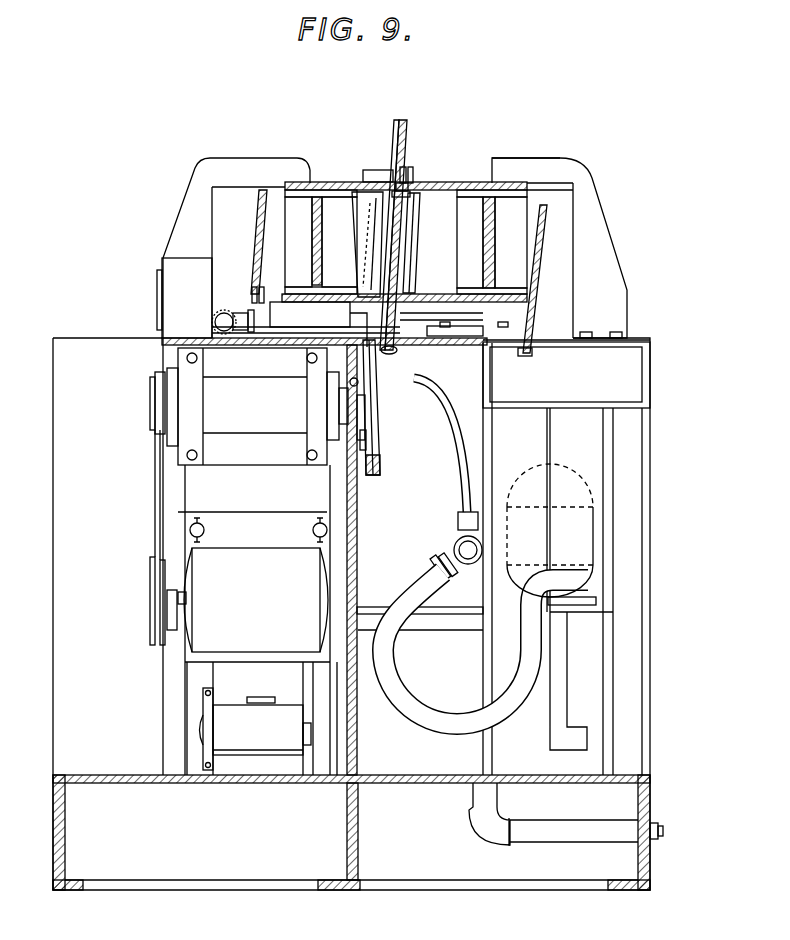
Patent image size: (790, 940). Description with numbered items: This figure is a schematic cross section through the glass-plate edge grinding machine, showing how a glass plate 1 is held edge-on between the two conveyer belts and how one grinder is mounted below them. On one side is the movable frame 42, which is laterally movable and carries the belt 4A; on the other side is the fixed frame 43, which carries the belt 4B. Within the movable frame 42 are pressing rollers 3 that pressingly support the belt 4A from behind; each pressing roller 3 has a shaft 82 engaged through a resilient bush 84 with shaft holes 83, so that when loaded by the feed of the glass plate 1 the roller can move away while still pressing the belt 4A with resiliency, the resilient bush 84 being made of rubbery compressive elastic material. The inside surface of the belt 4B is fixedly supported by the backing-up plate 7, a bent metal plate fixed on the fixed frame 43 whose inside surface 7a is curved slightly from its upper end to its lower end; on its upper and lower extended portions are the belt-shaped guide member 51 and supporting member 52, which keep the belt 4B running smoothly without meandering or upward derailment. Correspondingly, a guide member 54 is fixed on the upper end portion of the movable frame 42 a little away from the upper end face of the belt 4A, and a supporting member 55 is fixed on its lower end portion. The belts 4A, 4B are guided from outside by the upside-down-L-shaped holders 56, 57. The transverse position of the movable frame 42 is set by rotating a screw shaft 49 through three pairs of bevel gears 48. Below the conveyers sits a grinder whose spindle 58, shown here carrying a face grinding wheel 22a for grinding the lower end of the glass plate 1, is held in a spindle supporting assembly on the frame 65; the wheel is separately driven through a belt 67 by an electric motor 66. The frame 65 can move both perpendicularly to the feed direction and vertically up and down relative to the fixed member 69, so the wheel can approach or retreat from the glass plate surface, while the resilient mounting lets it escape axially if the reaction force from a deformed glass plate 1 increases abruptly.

The glass plate 1 is at (408, 128).
The pressing roller 3 is at (395, 232).
The backing-up plate 7 is at (405, 211).
The inside surface 7a is at (413, 307).
The face grinding wheel 22a is at (380, 436).
The movable frame 42 is at (312, 175).
The fixed frame 43 is at (480, 183).
The belt 4A is at (258, 222).
The belt 4B is at (540, 248).
The bevel gears 48 is at (222, 320).
The screw shaft 49 is at (220, 300).
The guide member 51 is at (402, 194).
The supporting member 52 is at (485, 543).
The guide member 54 is at (406, 186).
The supporting member 55 is at (380, 363).
The upside-down-L-shaped holder 56 is at (195, 170).
The upside-down-L-shaped holder 57 is at (592, 185).
The spindle 58 is at (373, 432).
The frame 65 is at (241, 452).
The electric motor 66 is at (256, 600).
The belt 67 is at (155, 577).
The fixed member 69 is at (282, 522).
The shaft 82 is at (393, 173).
The shaft holes 83 is at (368, 180).
The resilient bush 84 is at (372, 178).